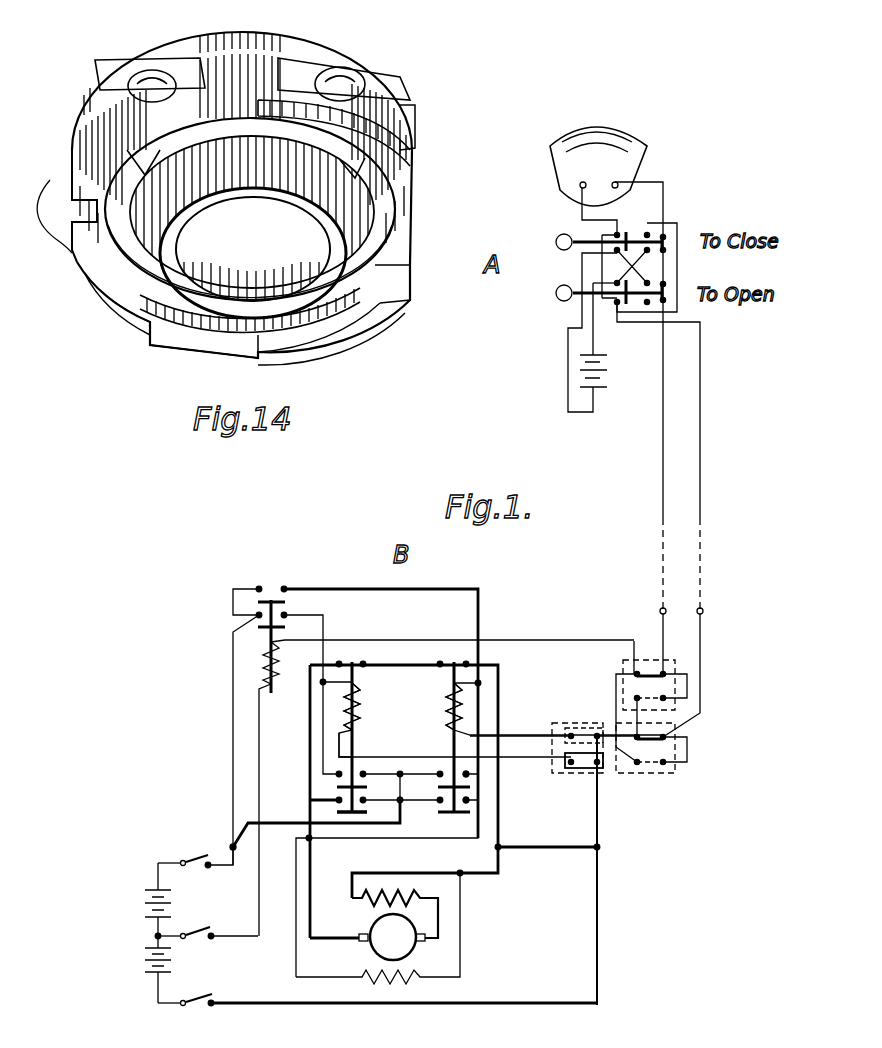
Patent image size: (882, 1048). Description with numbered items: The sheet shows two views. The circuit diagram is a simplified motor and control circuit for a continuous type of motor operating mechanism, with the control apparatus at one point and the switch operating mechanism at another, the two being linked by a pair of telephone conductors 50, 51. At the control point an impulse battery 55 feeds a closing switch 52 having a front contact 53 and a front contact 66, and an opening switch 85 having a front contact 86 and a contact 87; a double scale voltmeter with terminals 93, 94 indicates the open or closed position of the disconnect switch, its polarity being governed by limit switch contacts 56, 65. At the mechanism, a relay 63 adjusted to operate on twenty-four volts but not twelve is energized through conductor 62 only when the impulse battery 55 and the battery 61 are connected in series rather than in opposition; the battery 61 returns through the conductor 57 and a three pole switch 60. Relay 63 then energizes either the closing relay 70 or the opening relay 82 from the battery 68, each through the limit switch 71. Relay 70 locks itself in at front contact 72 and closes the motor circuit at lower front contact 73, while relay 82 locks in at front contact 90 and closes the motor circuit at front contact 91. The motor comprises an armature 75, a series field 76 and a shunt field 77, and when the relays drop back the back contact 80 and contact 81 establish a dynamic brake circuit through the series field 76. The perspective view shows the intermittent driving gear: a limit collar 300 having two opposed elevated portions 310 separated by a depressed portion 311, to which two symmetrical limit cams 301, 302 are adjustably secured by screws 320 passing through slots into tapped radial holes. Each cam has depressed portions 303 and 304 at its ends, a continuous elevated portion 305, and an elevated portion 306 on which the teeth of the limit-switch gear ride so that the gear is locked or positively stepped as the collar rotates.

In FIG. 14, the limit collar 300 is at (143, 288).
In FIG. 14, the limit cam 301 is at (75, 130).
In FIG. 14, the limit cam 302 is at (380, 317).
In FIG. 14, the depressed portion 303 is at (90, 182).
In FIG. 14, the depressed portion 304 is at (373, 138).
In FIG. 14, the elevated portion 305 is at (350, 160).
In FIG. 14, the elevated portion 306 is at (77, 138).
In FIG. 14, the elevated portion 310 is at (118, 275).
In FIG. 14, the depressed portion 311 is at (200, 143).
In FIG. 14, the screw 320 is at (130, 80).
In FIG. 1, the telephone conductor 50 is at (664, 405).
In FIG. 1, the telephone conductor 51 is at (701, 426).
In FIG. 1, the closing switch 52 is at (558, 238).
In FIG. 1, the front contact 53 is at (617, 233).
In FIG. 1, the impulse battery 55 is at (612, 373).
In FIG. 1, the limit switch contact 56 is at (647, 735).
In FIG. 1, the conductor 57 is at (598, 795).
In FIG. 1, the three pole switch 60 is at (197, 867).
In FIG. 1, the battery 61 is at (132, 963).
In FIG. 1, the conductor 62 is at (258, 877).
In FIG. 1, the relay 63 is at (258, 670).
In FIG. 1, the limit switch contact 65 is at (647, 668).
In FIG. 1, the front contact 66 is at (653, 235).
In FIG. 1, the battery 68 is at (130, 903).
In FIG. 1, the closing switch relay 70 is at (363, 713).
In FIG. 1, the limit switch 71 is at (583, 763).
In FIG. 1, the front contact 72 is at (364, 772).
In FIG. 1, the lower front contact 73 is at (348, 830).
In FIG. 1, the armature 75 is at (378, 940).
In FIG. 1, the series field 76 is at (408, 892).
In FIG. 1, the shunt field 77 is at (420, 983).
In FIG. 1, the back contact 80 is at (364, 680).
In FIG. 1, the contact 81 is at (442, 677).
In FIG. 1, the opening relay 82 is at (442, 712).
In FIG. 1, the opening switch 85 is at (557, 297).
In FIG. 1, the front contact 86 is at (653, 303).
In FIG. 1, the contact 87 is at (617, 298).
In FIG. 1, the front contact 90 is at (462, 782).
In FIG. 1, the front contact 91 is at (462, 805).
In FIG. 1, the voltmeter terminal 93 is at (620, 182).
In FIG. 1, the voltmeter terminal 94 is at (580, 183).